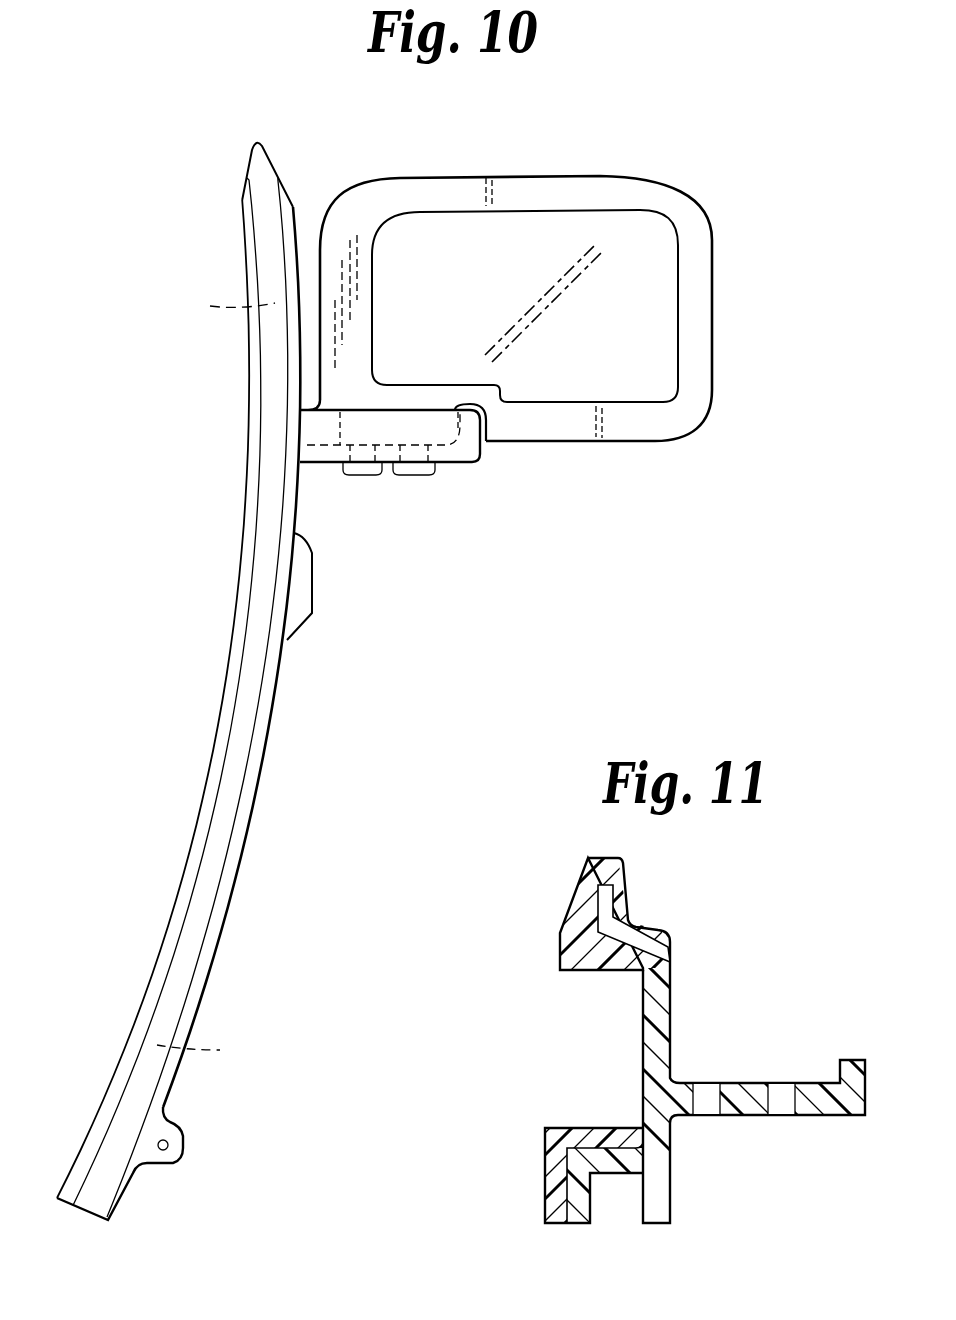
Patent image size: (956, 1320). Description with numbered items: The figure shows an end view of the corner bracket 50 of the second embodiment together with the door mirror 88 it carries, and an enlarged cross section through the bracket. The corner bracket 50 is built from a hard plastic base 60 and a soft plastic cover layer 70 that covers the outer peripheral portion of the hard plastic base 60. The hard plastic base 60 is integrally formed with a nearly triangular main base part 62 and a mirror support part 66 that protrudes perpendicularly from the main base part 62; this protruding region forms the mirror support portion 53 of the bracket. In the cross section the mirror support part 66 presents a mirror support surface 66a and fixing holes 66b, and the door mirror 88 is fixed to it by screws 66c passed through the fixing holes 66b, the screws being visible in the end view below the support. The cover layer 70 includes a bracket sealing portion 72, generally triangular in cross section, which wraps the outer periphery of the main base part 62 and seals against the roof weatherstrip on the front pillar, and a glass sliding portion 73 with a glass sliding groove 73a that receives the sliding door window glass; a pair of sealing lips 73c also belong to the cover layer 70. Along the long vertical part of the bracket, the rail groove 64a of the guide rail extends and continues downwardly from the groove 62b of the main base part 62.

In FIG. 10, the corner bracket 50 is at (184, 681).
In FIG. 10, the cover layer 70 is at (184, 681).
In FIG. 10, the bracket sealing portion 72 is at (240, 243).
In FIG. 11, the bracket sealing portion 72 is at (562, 938).
In FIG. 10, the groove 62b is at (218, 305).
In FIG. 10, the glass sliding portion 73 is at (190, 850).
In FIG. 10, the glass sliding groove 73a is at (192, 938).
In FIG. 10, the sealing lips 73c is at (220, 780).
In FIG. 10, the rail groove 64a is at (212, 1055).
In FIG. 10, the door mirror 88 is at (543, 185).
In FIG. 10, the mirror support portion 53 is at (421, 470).
In FIG. 11, the mirror support portion 53 is at (866, 1066).
In FIG. 10, the mirror support part 66 is at (383, 476).
In FIG. 11, the mirror support part 66 is at (741, 1100).
In FIG. 10, the mirror support surface 66a is at (482, 440).
In FIG. 11, the mirror support surface 66a is at (730, 1082).
In FIG. 10, the fixing holes 66b is at (368, 452).
In FIG. 11, the fixing holes 66b is at (712, 1116).
In FIG. 10, the screws 66c is at (350, 477).
In FIG. 11, the hard plastic base 60 is at (703, 947).
In FIG. 11, the main base part 62 is at (643, 1005).